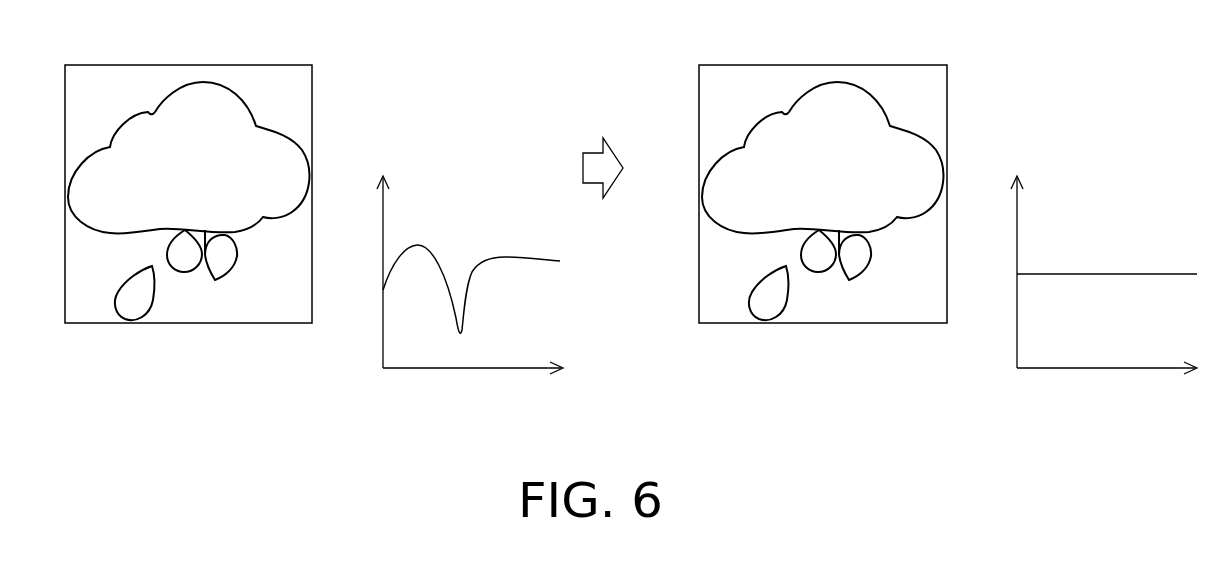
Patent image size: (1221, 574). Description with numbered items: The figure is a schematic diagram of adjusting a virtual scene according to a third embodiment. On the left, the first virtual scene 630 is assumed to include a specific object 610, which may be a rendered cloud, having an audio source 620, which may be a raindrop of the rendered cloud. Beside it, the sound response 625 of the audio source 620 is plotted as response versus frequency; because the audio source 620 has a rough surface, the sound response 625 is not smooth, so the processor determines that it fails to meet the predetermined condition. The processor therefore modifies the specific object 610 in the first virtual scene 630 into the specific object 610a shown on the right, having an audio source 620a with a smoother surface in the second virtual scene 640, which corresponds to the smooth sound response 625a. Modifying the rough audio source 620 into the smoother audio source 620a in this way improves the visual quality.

The specific object 610 is at (238, 117).
The audio source 620 is at (183, 248).
The sound response 625 is at (462, 178).
The first virtual scene 630 is at (199, 219).
The second virtual scene 640 is at (841, 220).
The specific object 610a is at (872, 117).
The audio source 620a is at (818, 248).
The sound response 625a is at (1097, 178).